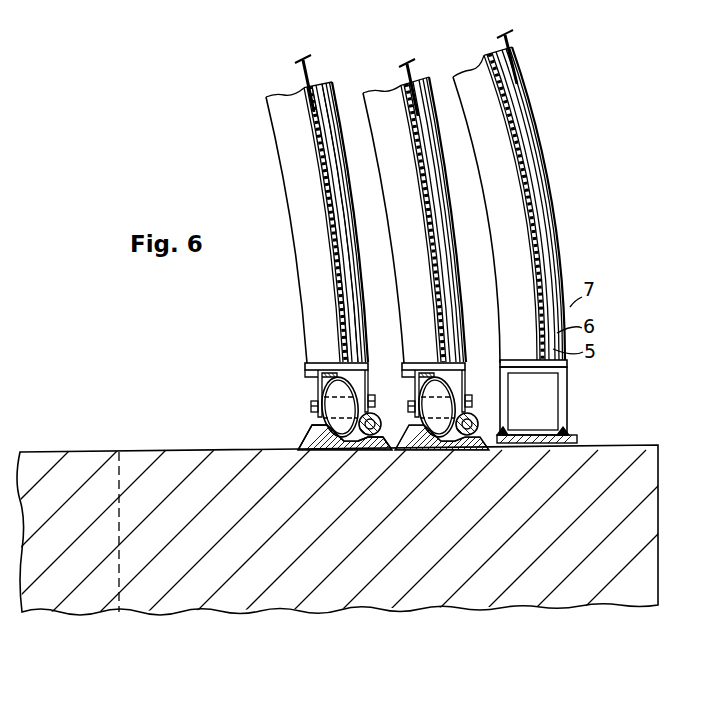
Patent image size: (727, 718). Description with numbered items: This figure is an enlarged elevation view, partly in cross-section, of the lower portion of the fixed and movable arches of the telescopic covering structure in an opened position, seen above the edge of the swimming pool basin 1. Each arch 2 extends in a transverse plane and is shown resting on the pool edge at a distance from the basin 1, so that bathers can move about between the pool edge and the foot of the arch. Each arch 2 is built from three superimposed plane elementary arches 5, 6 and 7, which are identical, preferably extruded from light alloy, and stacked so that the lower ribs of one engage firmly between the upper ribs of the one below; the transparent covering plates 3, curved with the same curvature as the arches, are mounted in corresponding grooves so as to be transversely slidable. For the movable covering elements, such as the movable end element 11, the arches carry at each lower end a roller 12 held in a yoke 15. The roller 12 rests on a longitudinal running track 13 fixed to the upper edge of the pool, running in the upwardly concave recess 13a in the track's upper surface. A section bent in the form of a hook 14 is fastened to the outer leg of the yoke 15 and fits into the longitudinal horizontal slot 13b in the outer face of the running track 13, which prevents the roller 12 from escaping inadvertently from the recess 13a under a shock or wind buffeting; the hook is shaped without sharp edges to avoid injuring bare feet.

The swimming pool basin 1 is at (118, 470).
The arch 2 is at (276, 199).
The transparent covering plate 3 is at (311, 59).
The plane elementary arch 5 is at (355, 350).
The plane elementary arch 6 is at (358, 333).
The plane elementary arch 7 is at (366, 307).
The movable end element 11 is at (298, 272).
The roller 12 is at (328, 392).
The running track 13 is at (300, 432).
The recess 13a is at (342, 452).
The slot 13b is at (385, 452).
The hook 14 is at (376, 436).
The yoke 15 is at (313, 378).